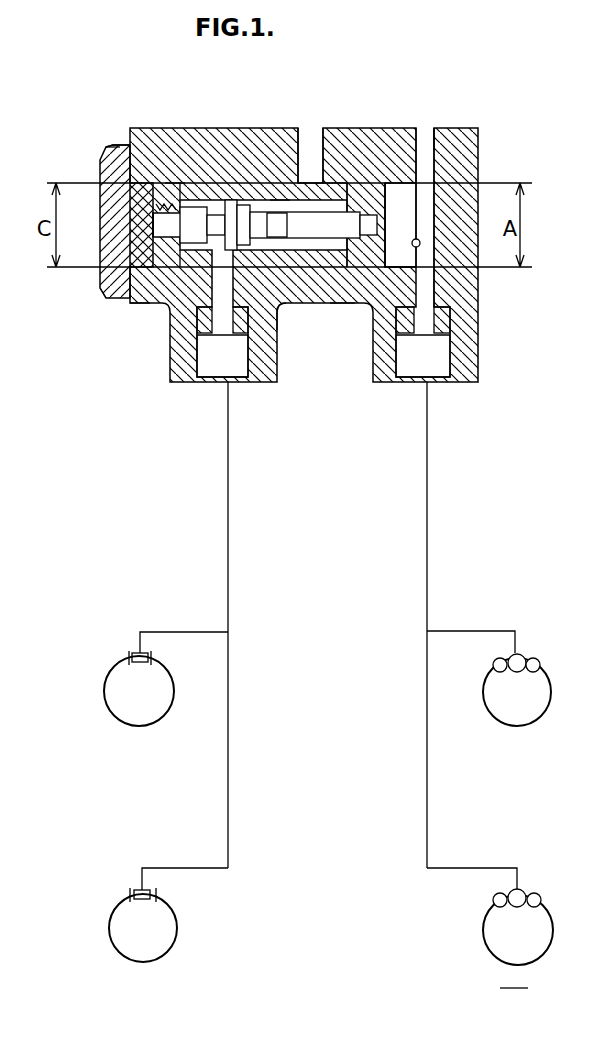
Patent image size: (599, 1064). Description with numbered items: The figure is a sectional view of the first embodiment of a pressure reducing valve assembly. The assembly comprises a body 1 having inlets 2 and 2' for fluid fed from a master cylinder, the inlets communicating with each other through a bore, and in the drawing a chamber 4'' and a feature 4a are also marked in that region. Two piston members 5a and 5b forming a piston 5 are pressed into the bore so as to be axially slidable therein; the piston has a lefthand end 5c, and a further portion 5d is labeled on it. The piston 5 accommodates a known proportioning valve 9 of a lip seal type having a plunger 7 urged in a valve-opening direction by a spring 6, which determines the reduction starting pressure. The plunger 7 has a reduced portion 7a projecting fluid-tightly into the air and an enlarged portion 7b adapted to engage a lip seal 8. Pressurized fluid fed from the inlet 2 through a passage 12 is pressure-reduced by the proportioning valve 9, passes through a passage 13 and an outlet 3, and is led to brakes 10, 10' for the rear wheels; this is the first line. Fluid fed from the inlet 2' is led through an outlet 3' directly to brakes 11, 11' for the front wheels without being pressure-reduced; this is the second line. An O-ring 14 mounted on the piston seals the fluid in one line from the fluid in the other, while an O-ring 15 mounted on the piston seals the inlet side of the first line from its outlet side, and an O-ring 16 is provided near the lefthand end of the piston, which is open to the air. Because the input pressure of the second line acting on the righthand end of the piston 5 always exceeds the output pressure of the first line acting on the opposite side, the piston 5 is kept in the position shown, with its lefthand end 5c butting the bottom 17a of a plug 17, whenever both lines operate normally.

The body 1 is at (477, 325).
The inlet 2 is at (309, 129).
The inlet 2' is at (426, 191).
The outlet 3 is at (236, 601).
The outlet 3' is at (440, 601).
The chamber 4'' is at (400, 171).
The ball 4a is at (420, 245).
The piston 5 is at (237, 178).
The piston member 5a is at (352, 172).
The piston member 5b is at (173, 180).
The lefthand end 5c is at (112, 146).
The sleeve shoulder 5d is at (435, 135).
The spring 6 is at (289, 303).
The plunger 7 is at (248, 180).
The reduced portion 7a is at (341, 304).
The enlarged portion 7b is at (137, 305).
The lip seal 8 is at (202, 178).
The proportioning valve 9 is at (285, 310).
The brake 10 is at (161, 652).
The brake 10' is at (164, 893).
The brake 11 is at (489, 654).
The brake 11' is at (496, 895).
The passage 12 is at (337, 168).
The passage 13 is at (170, 312).
The O-ring 14 is at (372, 383).
The O-ring 15 is at (278, 178).
The O-ring 16 is at (101, 302).
The plug 17 is at (102, 290).
The bottom 17a is at (100, 180).